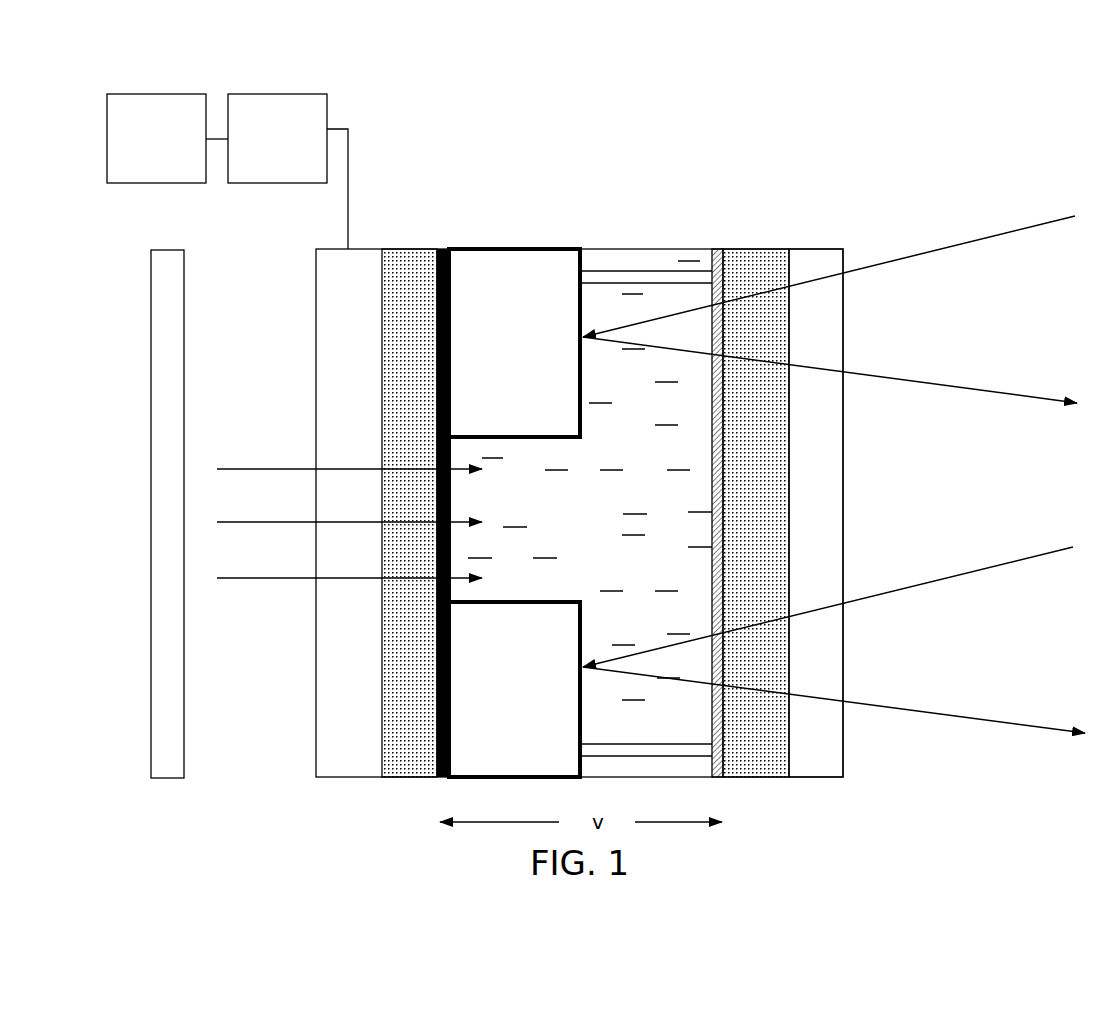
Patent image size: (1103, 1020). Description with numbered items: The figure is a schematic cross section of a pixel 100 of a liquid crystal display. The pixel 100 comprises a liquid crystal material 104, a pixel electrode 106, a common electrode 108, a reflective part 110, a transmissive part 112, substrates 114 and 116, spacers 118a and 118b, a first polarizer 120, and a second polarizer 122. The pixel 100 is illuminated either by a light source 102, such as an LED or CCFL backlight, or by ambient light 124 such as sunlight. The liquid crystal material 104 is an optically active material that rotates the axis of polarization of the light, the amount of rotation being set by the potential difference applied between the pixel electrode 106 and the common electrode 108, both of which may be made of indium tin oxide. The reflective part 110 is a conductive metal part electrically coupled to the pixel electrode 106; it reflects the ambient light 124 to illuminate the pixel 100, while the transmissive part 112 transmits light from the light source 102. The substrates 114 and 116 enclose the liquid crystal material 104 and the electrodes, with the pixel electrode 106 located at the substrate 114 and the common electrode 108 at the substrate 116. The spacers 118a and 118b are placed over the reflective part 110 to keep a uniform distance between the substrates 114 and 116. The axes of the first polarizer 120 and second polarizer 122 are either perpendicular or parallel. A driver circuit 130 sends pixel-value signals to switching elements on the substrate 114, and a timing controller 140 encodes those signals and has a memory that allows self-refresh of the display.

The pixel 100 is at (303, 823).
The light source 102 is at (167, 780).
The liquid crystal material 104 is at (656, 261).
The pixel electrode 106 is at (442, 779).
The common electrode 108 is at (718, 779).
The reflective part 110 is at (502, 393).
The transmissive part 112 is at (452, 513).
The substrate 114 is at (405, 247).
The substrate 116 is at (745, 249).
The spacer 118a is at (657, 276).
The spacer 118b is at (635, 751).
The first polarizer 120 is at (306, 262).
The second polarizer 122 is at (813, 249).
The ambient light 124 is at (935, 252).
The driver circuit 130 is at (327, 105).
The timing controller 140 is at (128, 184).